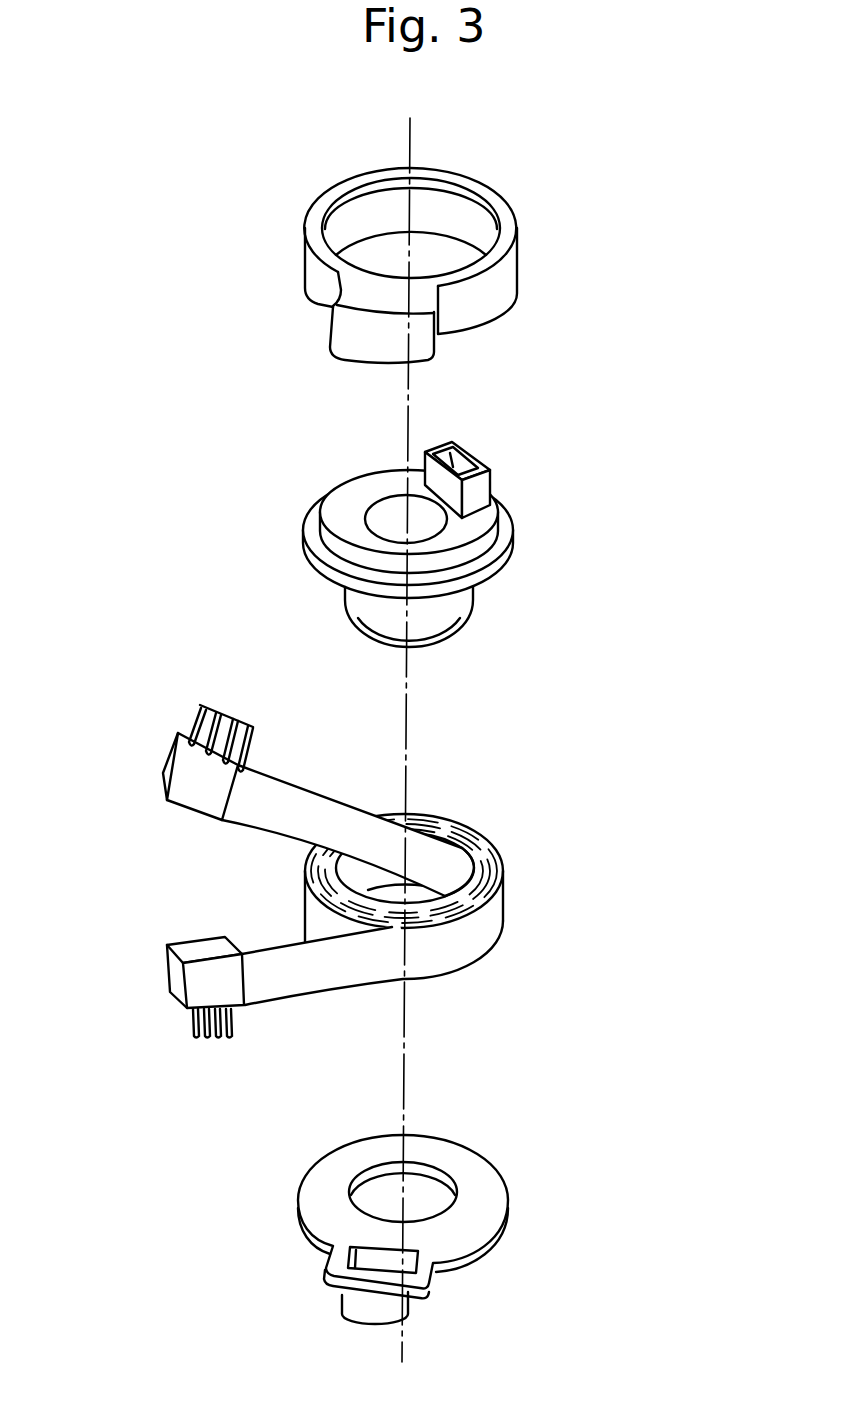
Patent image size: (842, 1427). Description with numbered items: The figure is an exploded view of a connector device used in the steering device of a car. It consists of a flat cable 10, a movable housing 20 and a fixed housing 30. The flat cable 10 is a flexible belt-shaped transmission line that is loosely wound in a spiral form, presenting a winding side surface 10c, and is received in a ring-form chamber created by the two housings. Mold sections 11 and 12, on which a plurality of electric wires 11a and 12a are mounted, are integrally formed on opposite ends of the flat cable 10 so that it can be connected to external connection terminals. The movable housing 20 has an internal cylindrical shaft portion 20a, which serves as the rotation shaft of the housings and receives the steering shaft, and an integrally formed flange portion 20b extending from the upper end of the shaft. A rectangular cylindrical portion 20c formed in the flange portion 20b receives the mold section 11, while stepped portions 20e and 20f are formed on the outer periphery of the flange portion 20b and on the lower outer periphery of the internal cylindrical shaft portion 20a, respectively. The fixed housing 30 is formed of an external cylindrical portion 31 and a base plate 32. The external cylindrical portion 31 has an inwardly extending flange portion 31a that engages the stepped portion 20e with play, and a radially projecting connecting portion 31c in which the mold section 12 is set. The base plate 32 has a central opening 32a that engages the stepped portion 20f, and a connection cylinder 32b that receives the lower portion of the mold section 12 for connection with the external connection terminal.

The fixed housing 30 is at (458, 746).
The external cylindrical portion 31 is at (463, 271).
The flange portion 31a is at (493, 197).
The connecting portion 31c is at (358, 330).
The base plate 32 is at (431, 1208).
The opening 32a is at (424, 1168).
The connection cylinder 32b is at (353, 1296).
The movable housing 20 is at (409, 561).
The internal cylindrical shaft portion 20a is at (455, 637).
The flange portion 20b is at (367, 490).
The rectangular cylindrical portion 20c is at (470, 462).
The stepped portion 20e is at (312, 525).
The stepped portion 20f is at (432, 643).
The flat cable 10 is at (448, 878).
The winding side surface 10c is at (480, 890).
The mold section 11 is at (296, 776).
The electric wires 11a is at (259, 683).
The mold section 12 is at (300, 996).
The electric wires 12a is at (235, 1037).